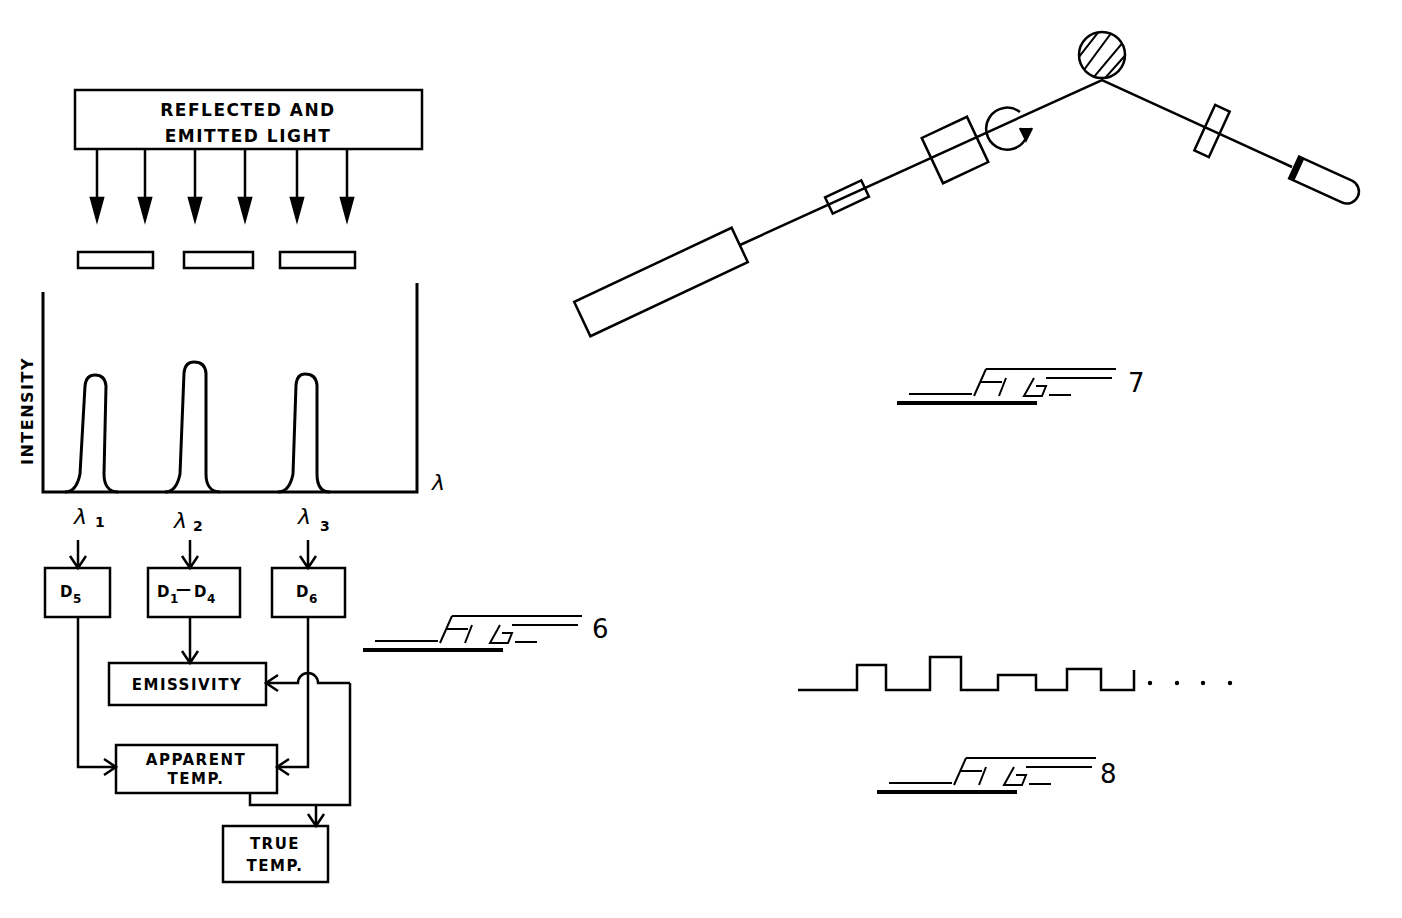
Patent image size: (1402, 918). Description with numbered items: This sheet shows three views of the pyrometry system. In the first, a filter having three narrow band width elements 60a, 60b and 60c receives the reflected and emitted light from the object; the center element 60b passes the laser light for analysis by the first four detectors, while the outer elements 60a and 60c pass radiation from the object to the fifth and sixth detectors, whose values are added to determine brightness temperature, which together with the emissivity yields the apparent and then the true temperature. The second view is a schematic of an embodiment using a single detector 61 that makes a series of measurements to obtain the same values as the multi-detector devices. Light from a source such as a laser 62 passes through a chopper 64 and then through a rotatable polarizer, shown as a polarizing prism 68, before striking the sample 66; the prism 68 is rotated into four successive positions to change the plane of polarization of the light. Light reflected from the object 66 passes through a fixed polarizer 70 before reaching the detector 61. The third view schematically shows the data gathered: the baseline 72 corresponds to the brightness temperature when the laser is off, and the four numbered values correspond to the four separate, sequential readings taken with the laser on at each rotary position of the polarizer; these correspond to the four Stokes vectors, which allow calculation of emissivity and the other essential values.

In FIG. 6, the filter element 60a is at (113, 269).
In FIG. 6, the center filter element 60b is at (223, 269).
In FIG. 6, the filter element 60c is at (340, 269).
In FIG. 7, the laser 62 is at (738, 268).
In FIG. 7, the chopper 64 is at (862, 206).
In FIG. 7, the sample 66 is at (1125, 58).
In FIG. 7, the polarizing prism 68 is at (972, 170).
In FIG. 7, the fixed polarizer 70 is at (1203, 130).
In FIG. 7, the detector 61 is at (1335, 196).
In FIG. 8, the baseline 72 is at (826, 688).